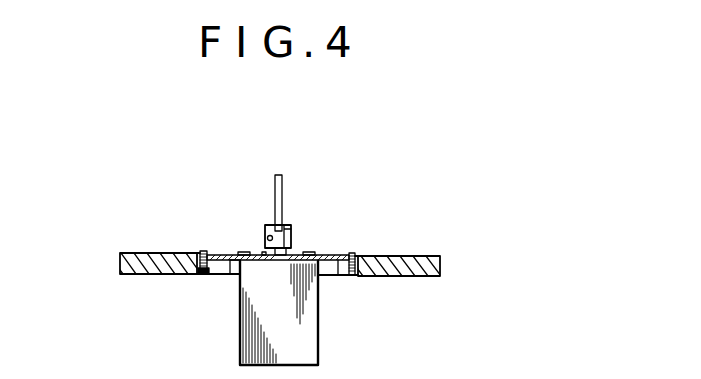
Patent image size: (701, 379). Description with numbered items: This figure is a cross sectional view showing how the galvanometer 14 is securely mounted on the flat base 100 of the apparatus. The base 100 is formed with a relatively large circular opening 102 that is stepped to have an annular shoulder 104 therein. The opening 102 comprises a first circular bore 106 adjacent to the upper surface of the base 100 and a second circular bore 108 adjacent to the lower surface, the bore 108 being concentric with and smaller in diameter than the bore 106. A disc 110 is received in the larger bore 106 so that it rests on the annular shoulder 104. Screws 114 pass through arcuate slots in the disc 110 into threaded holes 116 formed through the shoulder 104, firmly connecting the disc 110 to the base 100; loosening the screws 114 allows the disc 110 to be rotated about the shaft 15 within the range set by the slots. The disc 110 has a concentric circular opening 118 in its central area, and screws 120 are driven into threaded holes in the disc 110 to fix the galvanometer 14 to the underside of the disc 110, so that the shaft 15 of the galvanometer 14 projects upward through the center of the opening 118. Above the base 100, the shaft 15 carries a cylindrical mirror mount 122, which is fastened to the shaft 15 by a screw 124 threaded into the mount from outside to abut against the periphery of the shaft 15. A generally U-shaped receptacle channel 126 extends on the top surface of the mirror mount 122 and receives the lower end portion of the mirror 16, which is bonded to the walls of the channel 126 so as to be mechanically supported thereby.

The galvanometer 14 is at (320, 347).
The shaft 15 is at (293, 247).
The mirror 16 is at (284, 180).
The base 100 is at (400, 277).
The circular opening 102 is at (330, 277).
The annular shoulder 104 is at (208, 277).
The first circular bore 106 is at (368, 256).
The second circular bore 108 is at (231, 275).
The disc 110 is at (346, 238).
The screws 114 is at (202, 251).
The threaded holes 116 is at (193, 277).
The central opening 118 is at (263, 252).
The screws 120 is at (243, 251).
The mirror mount 122 is at (291, 231).
The screw 124 is at (266, 240).
The receptacle channel 126 is at (292, 226).